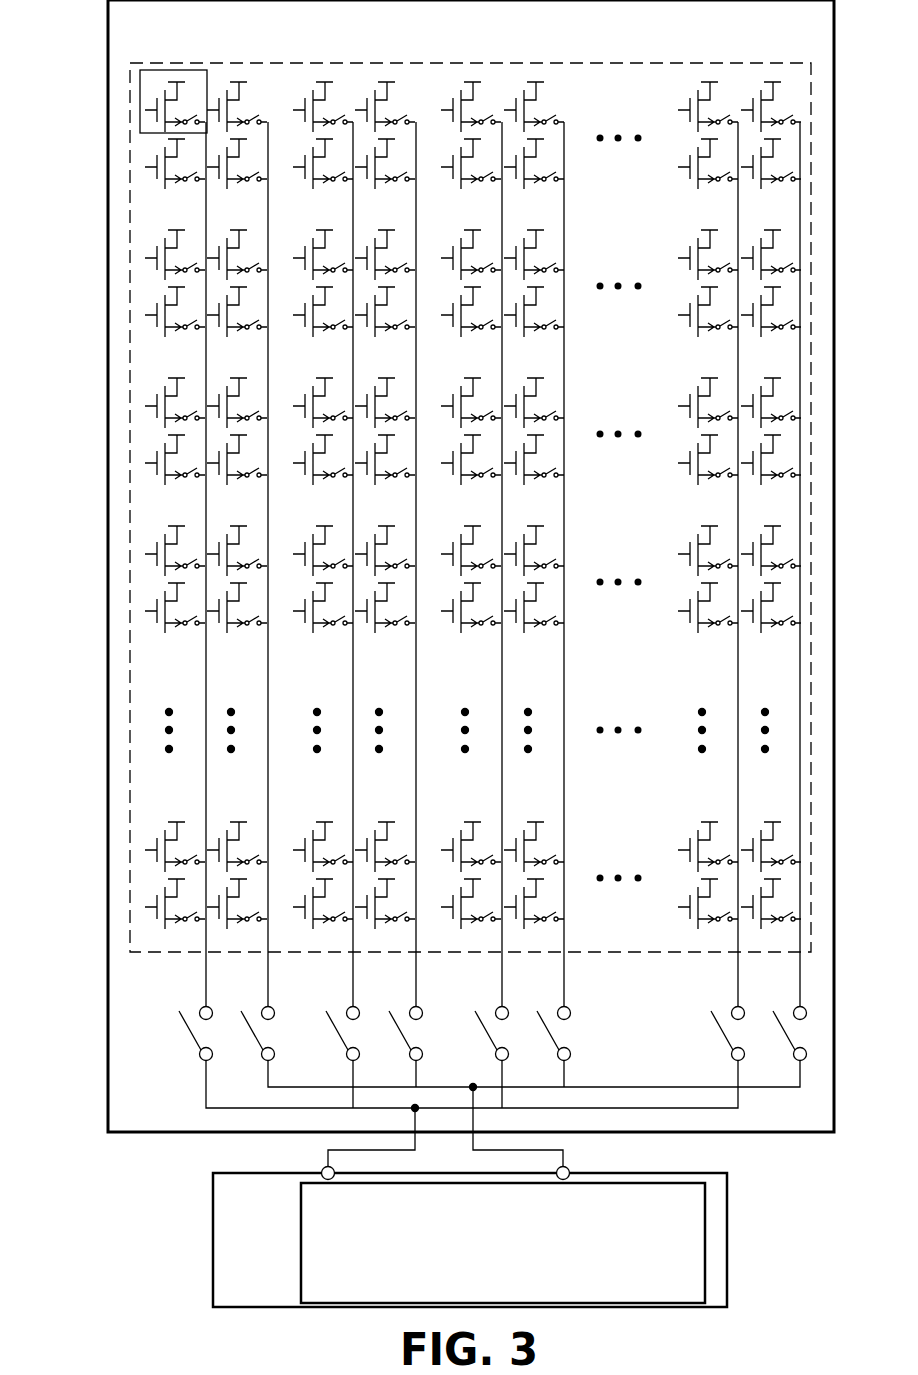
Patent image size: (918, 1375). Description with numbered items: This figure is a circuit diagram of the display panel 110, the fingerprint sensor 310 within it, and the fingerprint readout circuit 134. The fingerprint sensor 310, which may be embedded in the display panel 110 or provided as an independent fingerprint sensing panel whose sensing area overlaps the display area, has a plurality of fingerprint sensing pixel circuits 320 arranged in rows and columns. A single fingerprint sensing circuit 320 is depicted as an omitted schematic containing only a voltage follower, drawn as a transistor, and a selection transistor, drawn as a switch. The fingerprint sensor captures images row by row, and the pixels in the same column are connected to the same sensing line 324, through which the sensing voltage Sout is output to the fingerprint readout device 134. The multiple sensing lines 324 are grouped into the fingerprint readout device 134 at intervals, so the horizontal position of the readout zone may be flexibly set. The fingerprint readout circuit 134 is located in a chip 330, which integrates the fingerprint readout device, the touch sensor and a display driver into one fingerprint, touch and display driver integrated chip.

The display panel 110 is at (108, 307).
The fingerprint sensor 310 is at (623, 62).
The fingerprint sensing pixel circuit 320 is at (172, 70).
The sensing line 324 is at (205, 980).
The chip 330 is at (213, 1240).
The fingerprint readout circuit 134 is at (301, 1240).